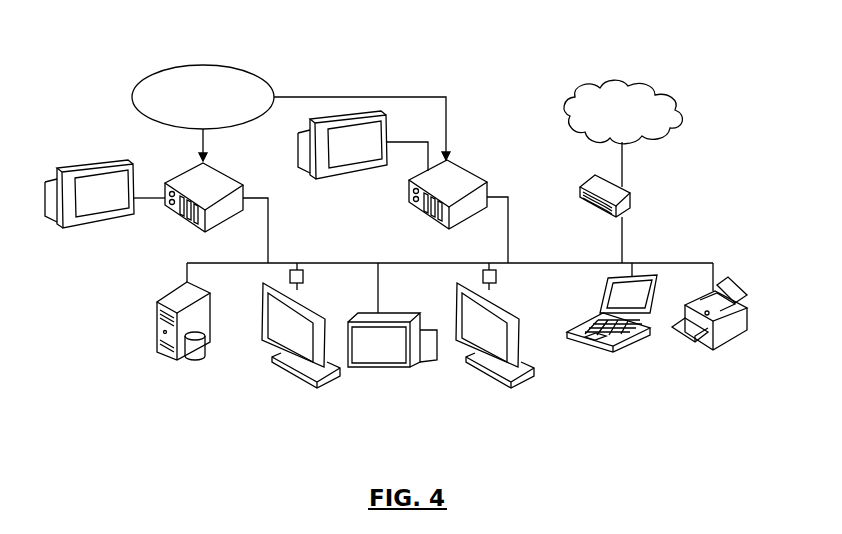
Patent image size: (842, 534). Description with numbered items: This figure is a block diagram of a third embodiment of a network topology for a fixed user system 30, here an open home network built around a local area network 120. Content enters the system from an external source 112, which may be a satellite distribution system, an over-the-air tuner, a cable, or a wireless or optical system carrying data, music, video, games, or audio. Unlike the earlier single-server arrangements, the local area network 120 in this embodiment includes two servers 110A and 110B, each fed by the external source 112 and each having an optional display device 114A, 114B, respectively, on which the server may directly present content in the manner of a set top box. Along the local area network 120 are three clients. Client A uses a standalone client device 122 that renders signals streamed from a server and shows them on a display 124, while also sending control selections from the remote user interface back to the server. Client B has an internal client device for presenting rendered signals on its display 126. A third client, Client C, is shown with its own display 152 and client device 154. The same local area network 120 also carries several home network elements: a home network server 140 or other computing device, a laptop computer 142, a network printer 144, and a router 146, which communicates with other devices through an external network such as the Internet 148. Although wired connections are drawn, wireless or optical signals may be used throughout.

The fixed user system 30 is at (112, 48).
The external source 112 is at (262, 70).
The display device 114A is at (100, 165).
The display device 114B is at (340, 115).
The server 110A is at (224, 176).
The server 110B is at (470, 175).
The Internet 148 is at (663, 90).
The router 146 is at (636, 195).
The local area network 120 is at (528, 261).
The client device 154 is at (487, 261).
The client device 122 is at (304, 268).
The display 124 is at (309, 300).
The display 126 is at (384, 311).
The display 152 is at (502, 305).
The laptop computer 142 is at (641, 272).
The home network server 140 is at (157, 304).
The network printer 144 is at (742, 300).